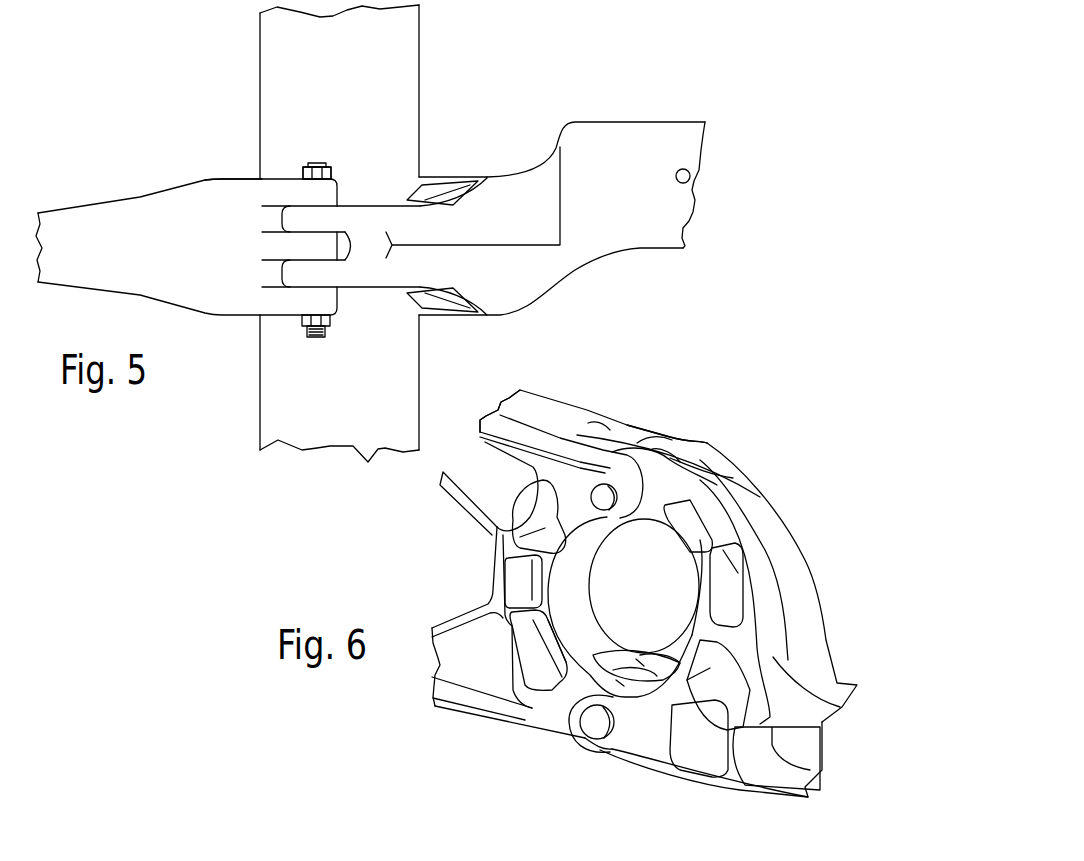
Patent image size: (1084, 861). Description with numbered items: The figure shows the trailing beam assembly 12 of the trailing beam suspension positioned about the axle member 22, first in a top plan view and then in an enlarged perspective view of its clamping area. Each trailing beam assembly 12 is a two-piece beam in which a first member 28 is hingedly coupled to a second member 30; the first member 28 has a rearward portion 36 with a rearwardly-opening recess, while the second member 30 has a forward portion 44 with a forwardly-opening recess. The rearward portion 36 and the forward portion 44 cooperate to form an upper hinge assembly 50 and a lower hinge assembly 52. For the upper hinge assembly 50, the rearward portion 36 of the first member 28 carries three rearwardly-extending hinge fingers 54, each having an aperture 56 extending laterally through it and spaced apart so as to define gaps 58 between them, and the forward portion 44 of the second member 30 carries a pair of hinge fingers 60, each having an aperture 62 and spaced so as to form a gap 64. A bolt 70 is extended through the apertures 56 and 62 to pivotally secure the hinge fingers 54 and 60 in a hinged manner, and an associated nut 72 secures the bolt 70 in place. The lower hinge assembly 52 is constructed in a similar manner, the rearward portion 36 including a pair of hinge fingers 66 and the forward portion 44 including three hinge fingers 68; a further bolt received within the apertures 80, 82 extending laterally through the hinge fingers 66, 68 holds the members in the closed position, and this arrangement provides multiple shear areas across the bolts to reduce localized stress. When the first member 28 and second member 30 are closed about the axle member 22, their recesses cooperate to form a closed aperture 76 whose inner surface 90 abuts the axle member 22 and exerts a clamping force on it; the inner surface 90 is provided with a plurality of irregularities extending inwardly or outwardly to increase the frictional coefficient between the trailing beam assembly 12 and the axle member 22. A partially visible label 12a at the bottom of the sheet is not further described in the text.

In FIG. 5, the trailing beam assembly 12 is at (138, 188).
In FIG. 6, the trailing beam assembly 12 is at (598, 398).
In FIG. 6, the boom arm (alternate) 12a is at (319, 854).
In FIG. 5, the axle member 22 is at (270, 63).
In FIG. 5, the first member 28 is at (72, 208).
In FIG. 6, the first member 28 is at (540, 390).
In FIG. 6, the second member 30 is at (820, 655).
In FIG. 5, the rearward portion 36 is at (210, 185).
In FIG. 6, the rearward portion 36 is at (627, 422).
In FIG. 5, the forward portion 44 is at (457, 177).
In FIG. 6, the forward portion 44 is at (758, 507).
In FIG. 5, the upper hinge assembly 50 is at (301, 155).
In FIG. 6, the upper hinge assembly 50 is at (720, 437).
In FIG. 6, the lower hinge assembly 52 is at (573, 760).
In FIG. 6, the hinge fingers 54 is at (665, 430).
In FIG. 6, the aperture 56 is at (598, 498).
In FIG. 6, the gaps 58 is at (636, 434).
In FIG. 6, the hinge fingers 60 is at (672, 445).
In FIG. 6, the aperture 62 is at (604, 512).
In FIG. 6, the gap 64 is at (682, 458).
In FIG. 6, the hinge fingers 66 is at (632, 657).
In FIG. 6, the hinge fingers 68 is at (655, 657).
In FIG. 5, the bolt 70 is at (318, 166).
In FIG. 5, the nut 72 is at (333, 318).
In FIG. 6, the closed aperture 76 is at (560, 647).
In FIG. 6, the aperture 80 is at (590, 722).
In FIG. 6, the aperture 82 is at (607, 727).
In FIG. 6, the inner surface 90 is at (562, 593).